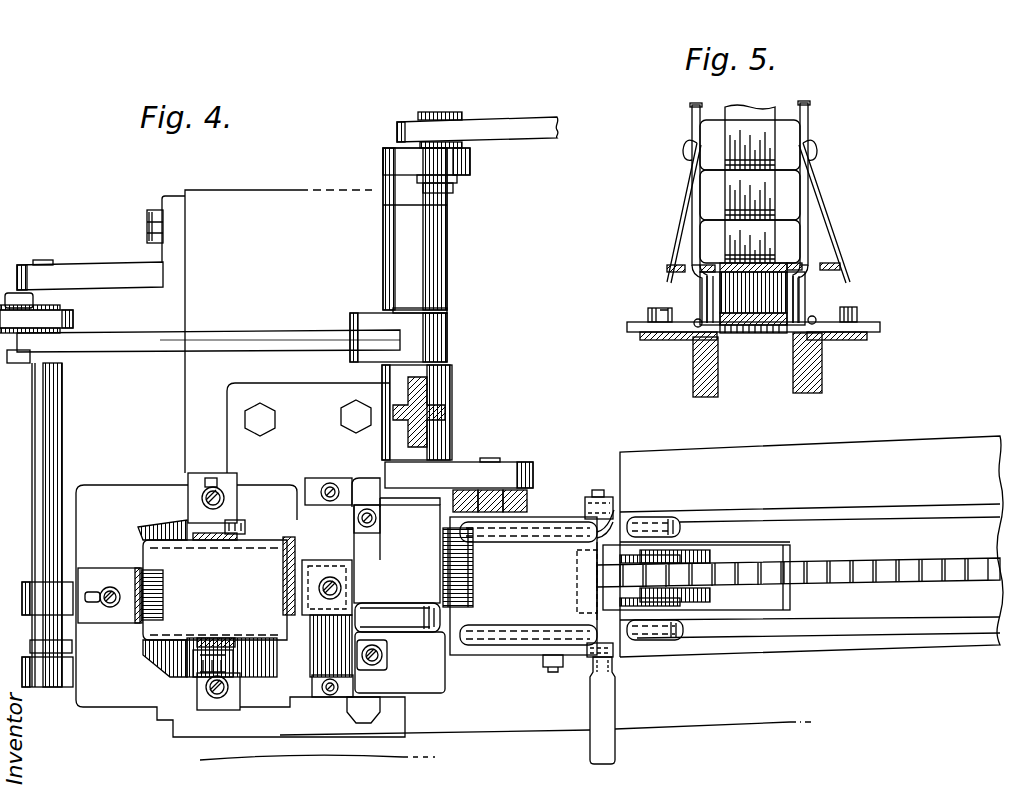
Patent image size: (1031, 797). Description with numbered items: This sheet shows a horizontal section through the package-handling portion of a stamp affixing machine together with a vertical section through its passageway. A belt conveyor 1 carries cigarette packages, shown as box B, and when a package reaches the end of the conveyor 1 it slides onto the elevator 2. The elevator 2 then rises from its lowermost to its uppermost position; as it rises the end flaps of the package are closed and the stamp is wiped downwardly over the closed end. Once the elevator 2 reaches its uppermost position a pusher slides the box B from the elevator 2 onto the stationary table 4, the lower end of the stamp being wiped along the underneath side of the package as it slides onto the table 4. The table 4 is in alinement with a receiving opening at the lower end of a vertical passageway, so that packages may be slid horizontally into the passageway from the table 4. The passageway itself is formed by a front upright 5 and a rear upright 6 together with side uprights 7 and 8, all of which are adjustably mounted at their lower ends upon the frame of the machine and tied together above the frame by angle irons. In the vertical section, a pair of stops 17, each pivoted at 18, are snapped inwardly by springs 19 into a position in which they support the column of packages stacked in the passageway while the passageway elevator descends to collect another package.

In FIG. 4, the belt conveyor 1 is at (930, 578).
In FIG. 4, the elevator 2 is at (532, 627).
In FIG. 4, the stationary table 4 is at (410, 610).
In FIG. 4, the front upright 5 is at (193, 650).
In FIG. 5, the front upright 5 is at (808, 108).
In FIG. 4, the rear upright 6 is at (241, 525).
In FIG. 5, the rear upright 6 is at (693, 116).
In FIG. 4, the side upright 7 is at (140, 563).
In FIG. 4, the side upright 8 is at (293, 532).
In FIG. 5, the cigarette package B is at (785, 187).
In FIG. 5, the stops 17 is at (667, 266).
In FIG. 5, the pivot 18 is at (687, 337).
In FIG. 5, the springs 19 is at (680, 200).